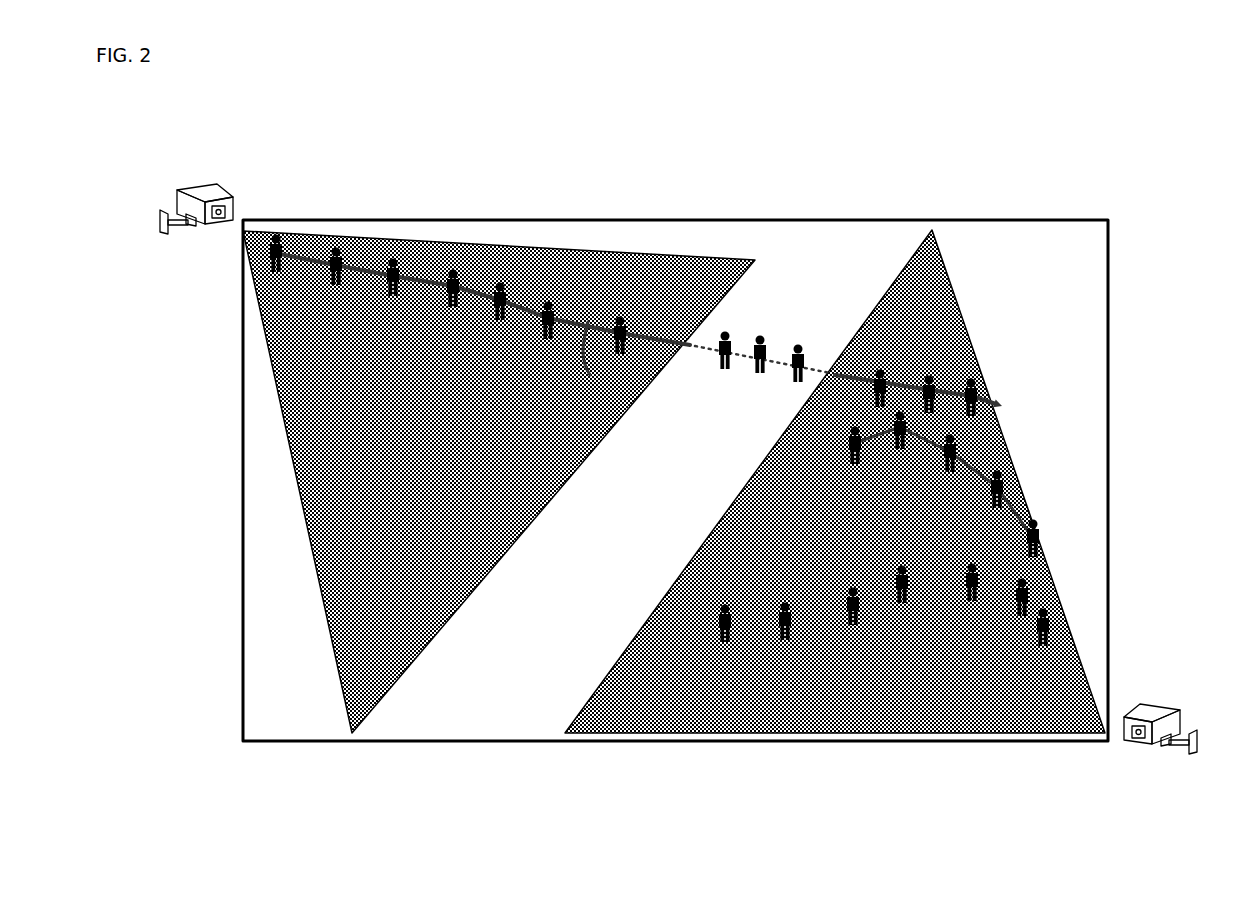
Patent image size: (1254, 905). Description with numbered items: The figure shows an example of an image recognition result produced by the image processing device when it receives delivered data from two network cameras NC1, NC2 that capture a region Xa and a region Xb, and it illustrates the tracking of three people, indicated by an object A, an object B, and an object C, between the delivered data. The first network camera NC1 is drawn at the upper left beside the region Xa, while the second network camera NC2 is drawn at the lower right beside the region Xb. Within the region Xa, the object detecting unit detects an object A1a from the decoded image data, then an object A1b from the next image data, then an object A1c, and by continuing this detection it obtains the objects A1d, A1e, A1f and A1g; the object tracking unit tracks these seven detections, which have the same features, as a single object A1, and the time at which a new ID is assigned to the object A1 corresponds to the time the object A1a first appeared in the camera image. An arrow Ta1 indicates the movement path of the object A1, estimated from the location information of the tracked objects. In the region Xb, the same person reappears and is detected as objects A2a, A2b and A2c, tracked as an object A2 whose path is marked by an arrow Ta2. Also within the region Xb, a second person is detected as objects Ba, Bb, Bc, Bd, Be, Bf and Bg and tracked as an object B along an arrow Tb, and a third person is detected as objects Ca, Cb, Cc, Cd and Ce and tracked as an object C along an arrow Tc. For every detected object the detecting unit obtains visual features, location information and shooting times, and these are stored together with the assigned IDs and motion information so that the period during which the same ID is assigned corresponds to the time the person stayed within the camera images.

The network camera NC1 is at (190, 183).
The network camera NC2 is at (1162, 704).
The region Xa is at (400, 650).
The region Xb is at (623, 672).
The object A1 is at (407, 312).
The object A2 is at (958, 370).
The object A1a is at (620, 317).
The object A1b is at (548, 302).
The object A1c is at (498, 283).
The object A1d is at (452, 270).
The object A1e is at (392, 260).
The object A1f is at (338, 246).
The object A1g is at (281, 234).
The object A2a is at (975, 381).
The object A2b is at (931, 376).
The object A2c is at (878, 372).
The arrow Ta1 is at (588, 323).
The movement trajectory of group A2 Ta2 is at (1003, 404).
The object B is at (754, 638).
The object Ba is at (717, 643).
The object Bb is at (773, 640).
The object Bc is at (846, 624).
The object Bd is at (901, 604).
The object Be is at (971, 603).
The object Bf is at (1030, 582).
The object Bg is at (1048, 612).
The movement trajectory of group B Tb is at (705, 622).
The object C is at (986, 455).
The object Ca is at (1036, 522).
The object Cb is at (1001, 474).
The object Cc is at (953, 440).
The object Cd is at (905, 416).
The object Ce is at (852, 430).
The movement trajectory of group C Tc is at (830, 458).